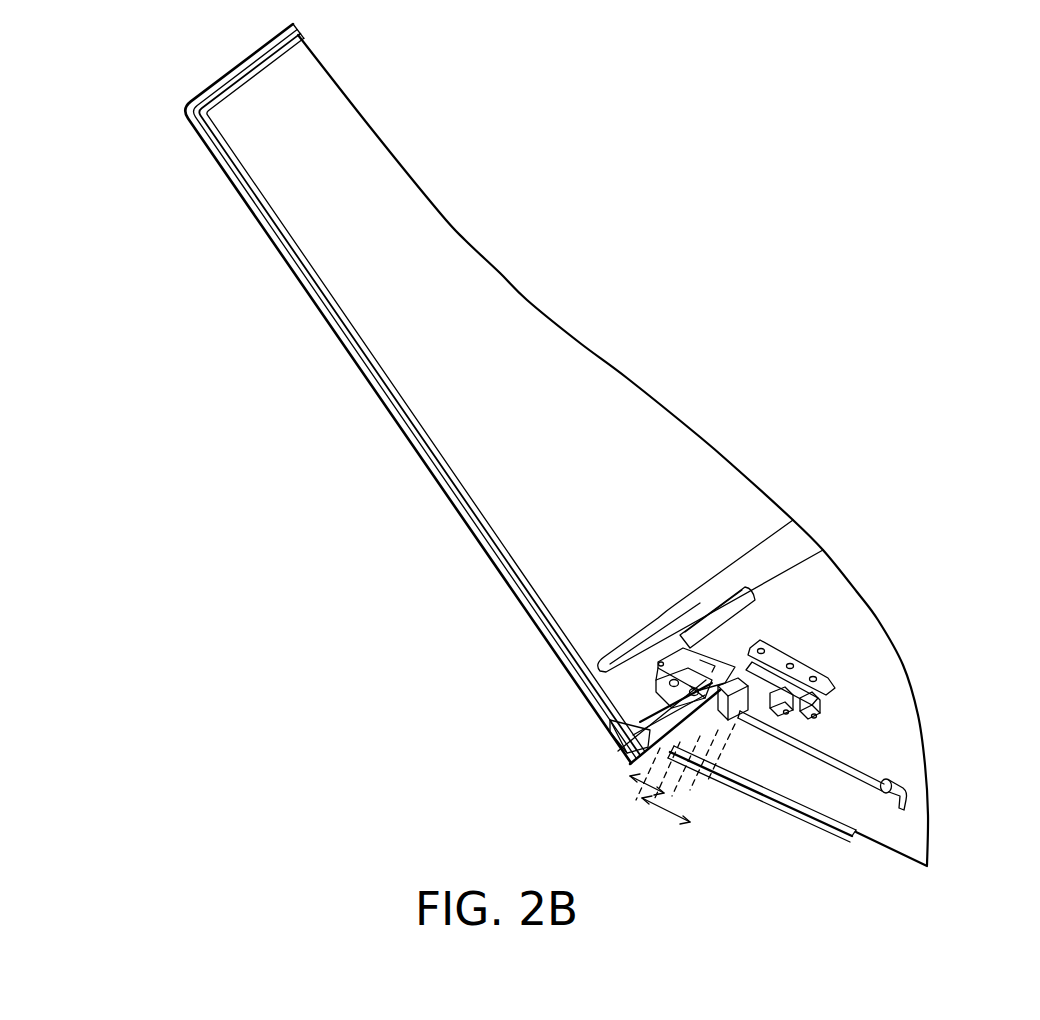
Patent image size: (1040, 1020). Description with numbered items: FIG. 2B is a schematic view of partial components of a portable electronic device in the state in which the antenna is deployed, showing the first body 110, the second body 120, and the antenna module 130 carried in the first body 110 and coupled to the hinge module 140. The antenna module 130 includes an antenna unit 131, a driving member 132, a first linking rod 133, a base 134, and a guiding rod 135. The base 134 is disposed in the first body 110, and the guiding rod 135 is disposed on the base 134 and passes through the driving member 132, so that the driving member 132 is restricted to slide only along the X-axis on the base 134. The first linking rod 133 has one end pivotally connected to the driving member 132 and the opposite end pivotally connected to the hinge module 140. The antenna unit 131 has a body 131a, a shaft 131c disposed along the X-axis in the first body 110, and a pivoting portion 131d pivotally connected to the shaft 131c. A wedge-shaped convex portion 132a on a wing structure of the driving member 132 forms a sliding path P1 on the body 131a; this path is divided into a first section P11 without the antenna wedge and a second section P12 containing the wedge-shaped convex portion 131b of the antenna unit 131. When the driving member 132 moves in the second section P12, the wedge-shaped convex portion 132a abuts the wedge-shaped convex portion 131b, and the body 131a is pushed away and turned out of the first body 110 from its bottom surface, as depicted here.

The first body 110 is at (907, 837).
The second body 120 is at (252, 228).
The antenna module 130 is at (908, 183).
The antenna unit 131 is at (908, 342).
The body of the antenna unit 131a is at (805, 800).
The wedge-shaped convex portion 131b is at (737, 727).
The shaft 131c is at (842, 750).
The pivoting portion 131d is at (895, 788).
The driving member 132 is at (693, 640).
The wedge-shaped convex portion 132a is at (633, 770).
The first linking rod 133 is at (668, 640).
The base 134 is at (832, 682).
The guiding rod 135 is at (786, 658).
The hinge module 140 is at (715, 610).
The first section P11 is at (633, 778).
The second section P12 is at (665, 808).
The sliding path P1 is at (567, 833).